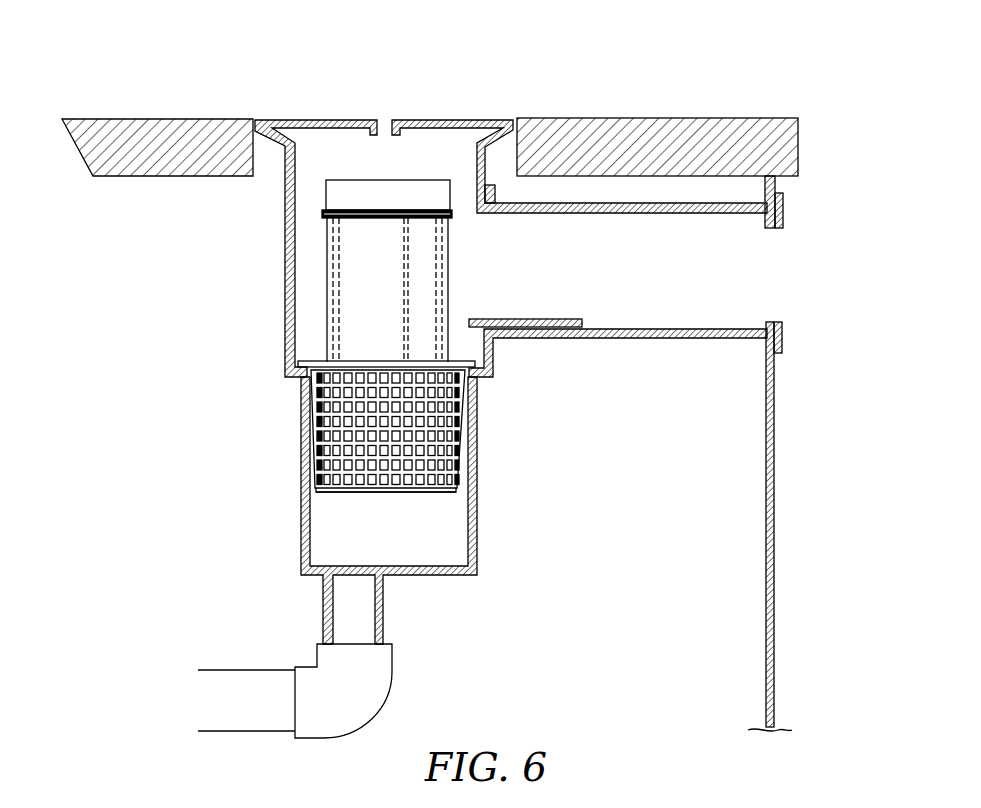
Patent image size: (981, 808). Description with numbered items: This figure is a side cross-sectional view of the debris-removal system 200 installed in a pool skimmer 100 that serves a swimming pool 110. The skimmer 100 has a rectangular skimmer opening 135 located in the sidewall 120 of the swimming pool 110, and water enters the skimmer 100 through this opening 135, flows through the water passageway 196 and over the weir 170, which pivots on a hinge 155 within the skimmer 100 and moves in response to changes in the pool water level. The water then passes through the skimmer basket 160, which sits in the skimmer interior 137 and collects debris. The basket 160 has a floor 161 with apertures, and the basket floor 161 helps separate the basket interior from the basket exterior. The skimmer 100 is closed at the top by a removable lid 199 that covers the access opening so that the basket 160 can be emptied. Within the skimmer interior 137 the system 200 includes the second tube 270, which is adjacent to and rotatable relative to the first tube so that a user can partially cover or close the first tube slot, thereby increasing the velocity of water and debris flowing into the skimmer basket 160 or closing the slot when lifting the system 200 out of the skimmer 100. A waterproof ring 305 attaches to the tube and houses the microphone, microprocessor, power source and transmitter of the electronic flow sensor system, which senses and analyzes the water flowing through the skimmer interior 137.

The system 200 is at (233, 66).
The lid 199 is at (303, 120).
The skimmer 100 is at (423, 88).
The water passageway 196 is at (580, 223).
The skimmer opening 135 is at (784, 250).
The waterproof ring 305 is at (343, 192).
The second tube 270 is at (343, 278).
The skimmer interior 137 is at (323, 325).
The skimmer basket 160 is at (323, 472).
The floor 161 is at (333, 496).
The weir 170 is at (537, 325).
The hinge 155 is at (603, 322).
The sidewall 120 is at (778, 583).
The swimming pool 110 is at (814, 651).